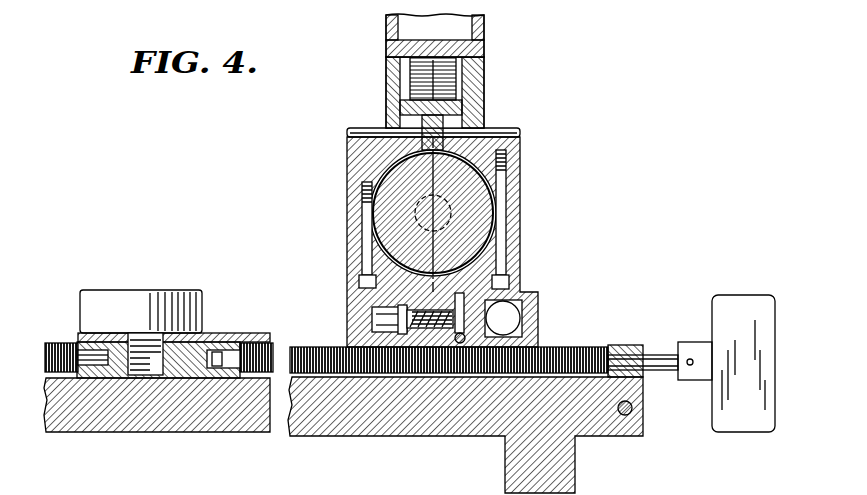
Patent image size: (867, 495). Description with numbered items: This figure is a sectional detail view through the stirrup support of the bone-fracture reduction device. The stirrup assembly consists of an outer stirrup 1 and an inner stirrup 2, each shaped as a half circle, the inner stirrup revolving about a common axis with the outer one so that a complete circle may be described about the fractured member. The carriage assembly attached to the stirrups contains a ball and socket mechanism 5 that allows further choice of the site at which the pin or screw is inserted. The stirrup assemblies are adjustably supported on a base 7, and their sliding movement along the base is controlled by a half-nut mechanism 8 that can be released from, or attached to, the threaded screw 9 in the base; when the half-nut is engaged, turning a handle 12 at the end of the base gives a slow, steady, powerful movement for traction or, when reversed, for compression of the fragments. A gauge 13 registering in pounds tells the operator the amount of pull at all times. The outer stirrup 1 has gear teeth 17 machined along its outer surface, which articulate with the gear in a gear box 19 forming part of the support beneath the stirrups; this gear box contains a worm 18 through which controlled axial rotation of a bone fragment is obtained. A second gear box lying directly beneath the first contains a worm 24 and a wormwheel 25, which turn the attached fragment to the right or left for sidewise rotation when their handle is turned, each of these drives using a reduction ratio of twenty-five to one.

The outer stirrup 1 is at (468, 98).
The inner stirrup 2 is at (484, 28).
The ball and socket mechanism 5 is at (437, 36).
The base 7 is at (200, 422).
The half-nut mechanism 8 is at (445, 377).
The threaded screw 9 is at (588, 350).
The handle 12 is at (760, 322).
The gauge 13 is at (141, 298).
The gear teeth 17 is at (413, 143).
The worm 18 is at (383, 197).
The gear box 19 is at (514, 246).
The worm 24 is at (538, 306).
The wormwheel 25 is at (383, 307).